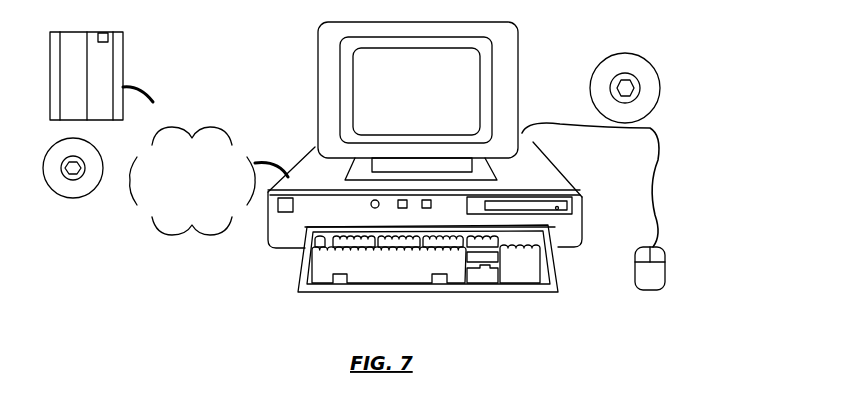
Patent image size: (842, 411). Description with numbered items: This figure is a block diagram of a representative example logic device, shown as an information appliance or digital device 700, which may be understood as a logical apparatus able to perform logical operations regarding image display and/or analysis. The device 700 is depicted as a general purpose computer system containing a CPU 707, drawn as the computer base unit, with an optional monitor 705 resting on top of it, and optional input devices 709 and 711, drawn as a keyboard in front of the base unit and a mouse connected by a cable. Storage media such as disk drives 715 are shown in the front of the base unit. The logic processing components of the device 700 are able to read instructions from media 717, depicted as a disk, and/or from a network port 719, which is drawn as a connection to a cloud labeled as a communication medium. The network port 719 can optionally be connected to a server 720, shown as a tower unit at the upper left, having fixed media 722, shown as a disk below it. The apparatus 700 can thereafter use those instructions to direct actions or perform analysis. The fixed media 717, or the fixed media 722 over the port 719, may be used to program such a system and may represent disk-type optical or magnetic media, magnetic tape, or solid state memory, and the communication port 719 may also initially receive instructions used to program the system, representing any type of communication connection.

The information appliance or digital device 700 is at (606, 29).
The monitor 705 is at (462, 77).
The CPU 707 is at (550, 172).
The input device 709 is at (352, 292).
The input device 711 is at (660, 275).
The storage media 715 is at (578, 198).
The media 717 is at (653, 61).
The network port 719 is at (265, 155).
The server 720 is at (108, 32).
The fixed media 722 is at (97, 146).